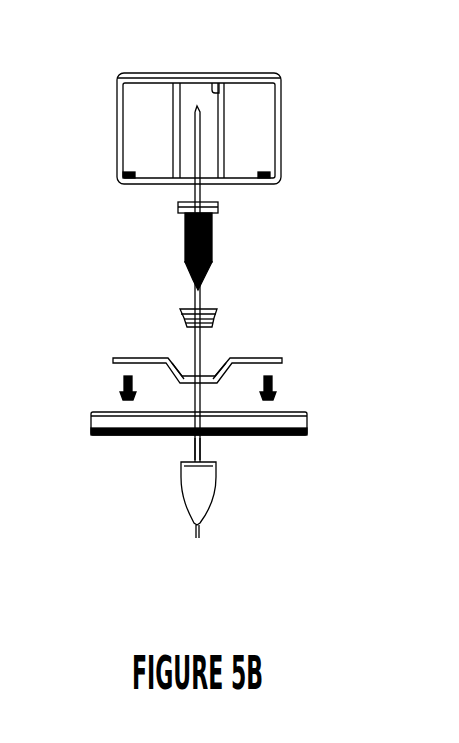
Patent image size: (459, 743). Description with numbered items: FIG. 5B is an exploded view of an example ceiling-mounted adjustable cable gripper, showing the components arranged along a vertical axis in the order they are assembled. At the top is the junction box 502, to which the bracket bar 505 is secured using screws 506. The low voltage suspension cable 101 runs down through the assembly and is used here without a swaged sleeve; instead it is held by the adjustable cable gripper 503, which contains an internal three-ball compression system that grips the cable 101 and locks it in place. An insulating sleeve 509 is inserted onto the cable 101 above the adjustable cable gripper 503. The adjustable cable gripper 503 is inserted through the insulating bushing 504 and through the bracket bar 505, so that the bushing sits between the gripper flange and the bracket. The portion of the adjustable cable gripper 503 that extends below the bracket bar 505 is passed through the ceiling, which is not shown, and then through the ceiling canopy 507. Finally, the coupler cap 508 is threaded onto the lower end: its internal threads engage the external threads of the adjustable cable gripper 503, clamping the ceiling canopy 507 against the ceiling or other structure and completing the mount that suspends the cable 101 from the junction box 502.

The junction box 502 is at (247, 72).
The insulating sleeve 509 is at (200, 157).
The adjustable cable gripper 503 is at (212, 233).
The insulating bushing 504 is at (203, 308).
The bracket bar 505 is at (132, 360).
The screws 506 is at (124, 380).
The ceiling canopy 507 is at (270, 435).
The low voltage suspension cable 101 is at (192, 447).
The coupler cap 508 is at (213, 508).